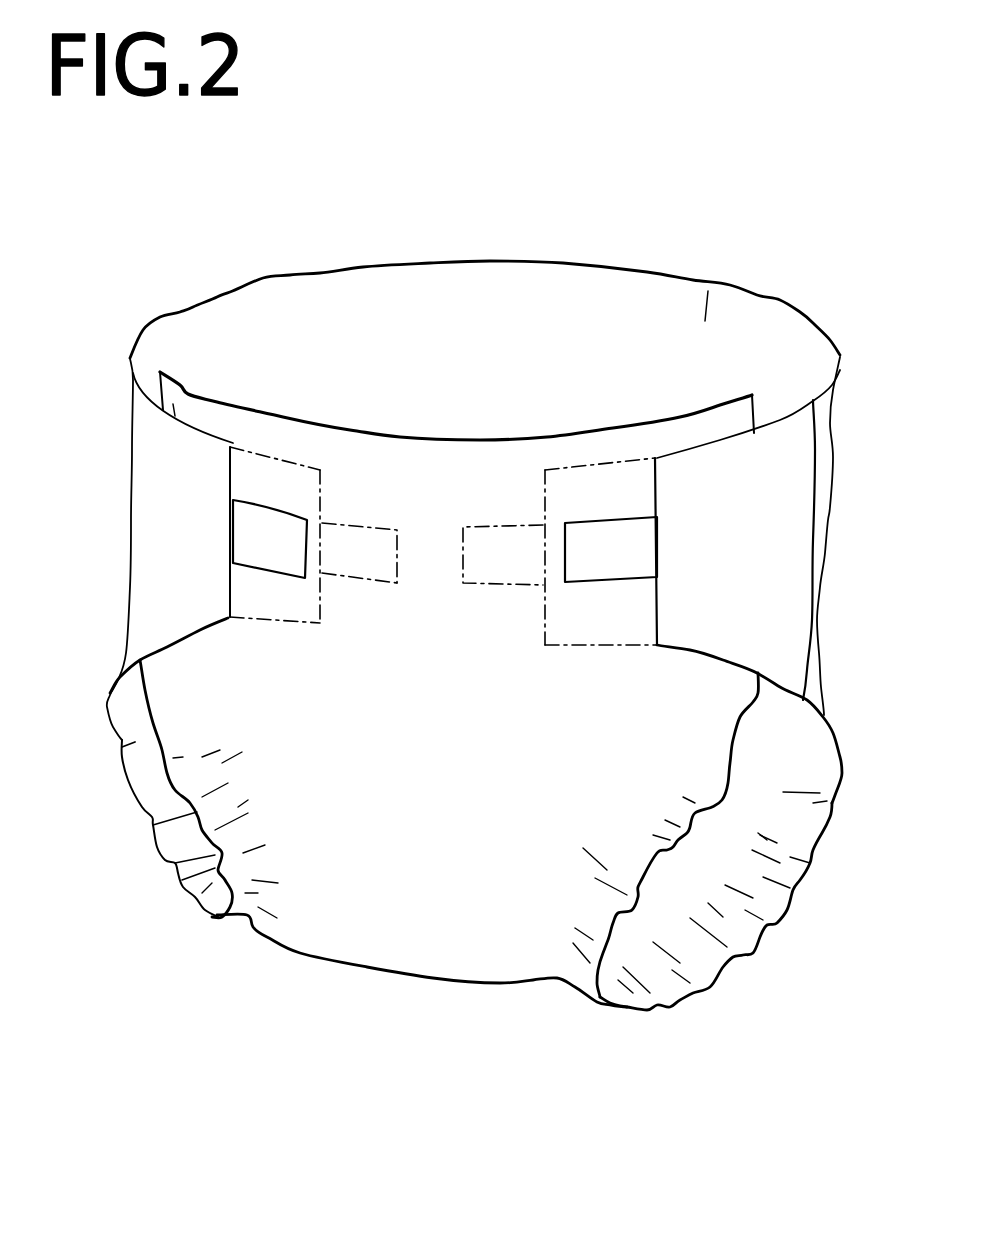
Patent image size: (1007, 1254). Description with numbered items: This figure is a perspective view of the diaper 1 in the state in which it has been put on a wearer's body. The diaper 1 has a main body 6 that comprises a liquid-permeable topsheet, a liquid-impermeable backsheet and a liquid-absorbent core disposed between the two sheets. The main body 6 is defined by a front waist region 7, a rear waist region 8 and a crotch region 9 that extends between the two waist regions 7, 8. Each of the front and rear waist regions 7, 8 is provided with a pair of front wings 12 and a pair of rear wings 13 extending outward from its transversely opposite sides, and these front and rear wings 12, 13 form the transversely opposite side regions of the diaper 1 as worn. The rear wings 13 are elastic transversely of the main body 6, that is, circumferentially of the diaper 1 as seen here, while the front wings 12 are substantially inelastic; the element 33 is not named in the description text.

The diaper 1 is at (681, 160).
The main body 6 is at (833, 498).
The front waist region 7 is at (398, 485).
The rear waist region 8 is at (567, 280).
The crotch region 9 is at (503, 963).
The front wings 12 is at (753, 703).
The rear wings 13 is at (728, 643).
The fastening tape 33 is at (587, 573).